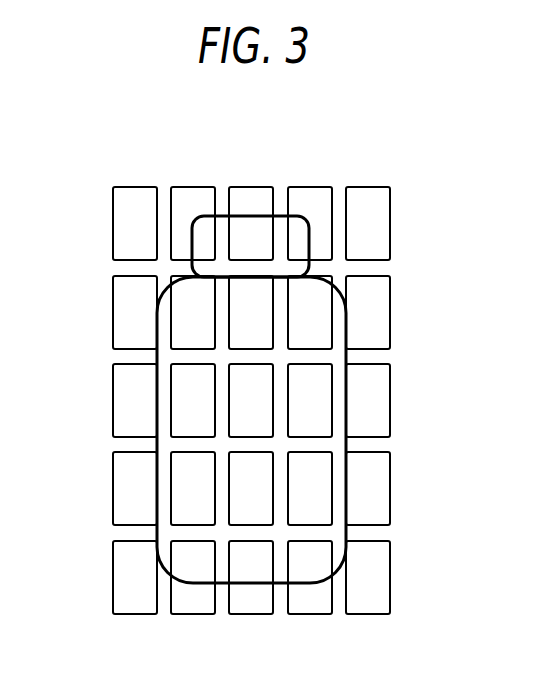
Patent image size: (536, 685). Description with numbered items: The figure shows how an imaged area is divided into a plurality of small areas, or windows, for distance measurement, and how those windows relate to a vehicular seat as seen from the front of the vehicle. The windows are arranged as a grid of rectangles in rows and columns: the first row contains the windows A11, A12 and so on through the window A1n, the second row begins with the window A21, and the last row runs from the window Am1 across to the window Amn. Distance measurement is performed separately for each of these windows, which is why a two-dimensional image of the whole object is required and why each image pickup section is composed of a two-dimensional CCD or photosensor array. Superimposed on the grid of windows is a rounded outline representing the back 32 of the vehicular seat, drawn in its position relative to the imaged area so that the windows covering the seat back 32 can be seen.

The small area (window) A11 is at (131, 187).
The small area (window) A12 is at (190, 187).
The small area (window) A1n is at (365, 187).
The small area (window) A21 is at (113, 313).
The small area (window) Am1 is at (113, 579).
The small area (window) Amn is at (392, 576).
The back of vehicular seat 32 is at (301, 585).